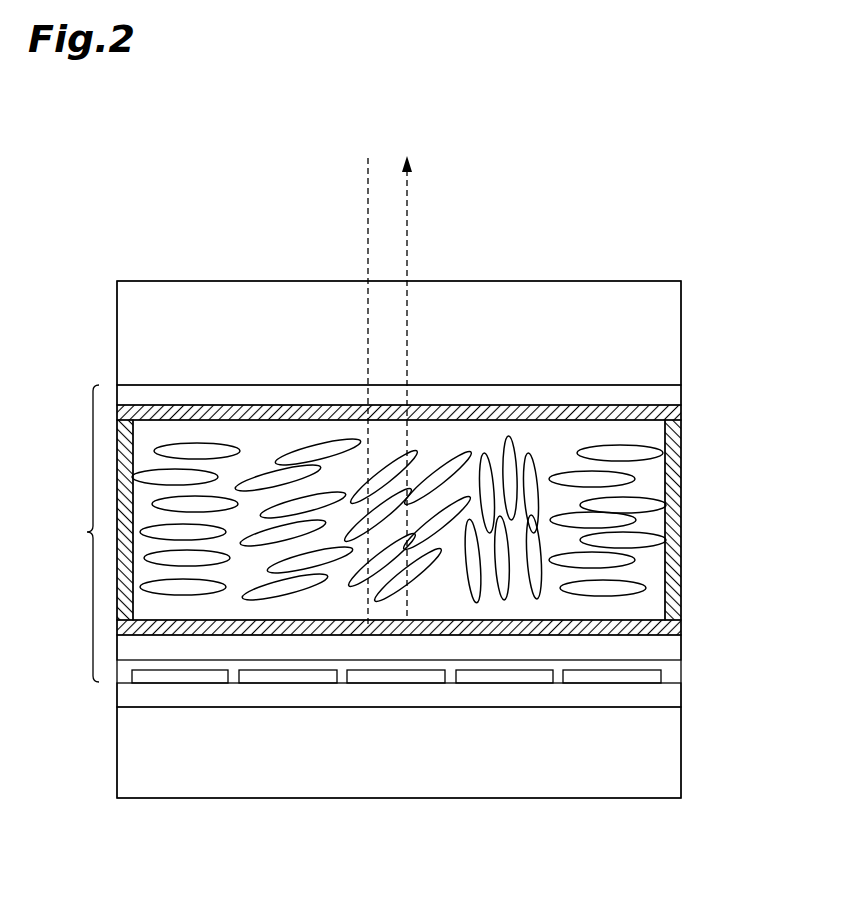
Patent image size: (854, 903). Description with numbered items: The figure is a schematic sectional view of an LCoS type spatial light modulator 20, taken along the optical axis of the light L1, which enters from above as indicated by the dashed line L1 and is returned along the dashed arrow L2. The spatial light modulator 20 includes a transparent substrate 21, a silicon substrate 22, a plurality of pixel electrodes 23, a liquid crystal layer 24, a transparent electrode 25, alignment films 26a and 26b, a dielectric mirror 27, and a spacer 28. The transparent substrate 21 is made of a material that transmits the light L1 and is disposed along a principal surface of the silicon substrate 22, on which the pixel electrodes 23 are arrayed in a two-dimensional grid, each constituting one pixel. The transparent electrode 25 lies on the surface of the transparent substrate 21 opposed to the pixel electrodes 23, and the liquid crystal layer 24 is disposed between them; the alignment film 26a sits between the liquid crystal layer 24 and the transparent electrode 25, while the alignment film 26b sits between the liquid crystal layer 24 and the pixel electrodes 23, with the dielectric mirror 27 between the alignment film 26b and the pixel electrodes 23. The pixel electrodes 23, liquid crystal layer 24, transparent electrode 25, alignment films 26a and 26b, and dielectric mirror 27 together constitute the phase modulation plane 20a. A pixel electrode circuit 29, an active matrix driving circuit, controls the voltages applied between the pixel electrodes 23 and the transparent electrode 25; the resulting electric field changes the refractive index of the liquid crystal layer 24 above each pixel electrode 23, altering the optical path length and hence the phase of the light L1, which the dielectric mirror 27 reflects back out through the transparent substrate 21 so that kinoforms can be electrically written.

The spatial light modulator 20 is at (622, 184).
The phase modulation plane 20a is at (67, 533).
The transparent substrate 21 is at (478, 296).
The silicon substrate 22 is at (413, 792).
The pixel electrodes 23 is at (180, 683).
The liquid crystal layer 24 is at (657, 483).
The transparent electrode 25 is at (671, 395).
The alignment film 26a is at (270, 410).
The alignment film 26b is at (470, 637).
The dielectric mirror 27 is at (675, 650).
The spacer 28 is at (671, 537).
The pixel electrode circuit 29 is at (675, 697).
The light L1 is at (366, 190).
The light ray L2 is at (409, 197).